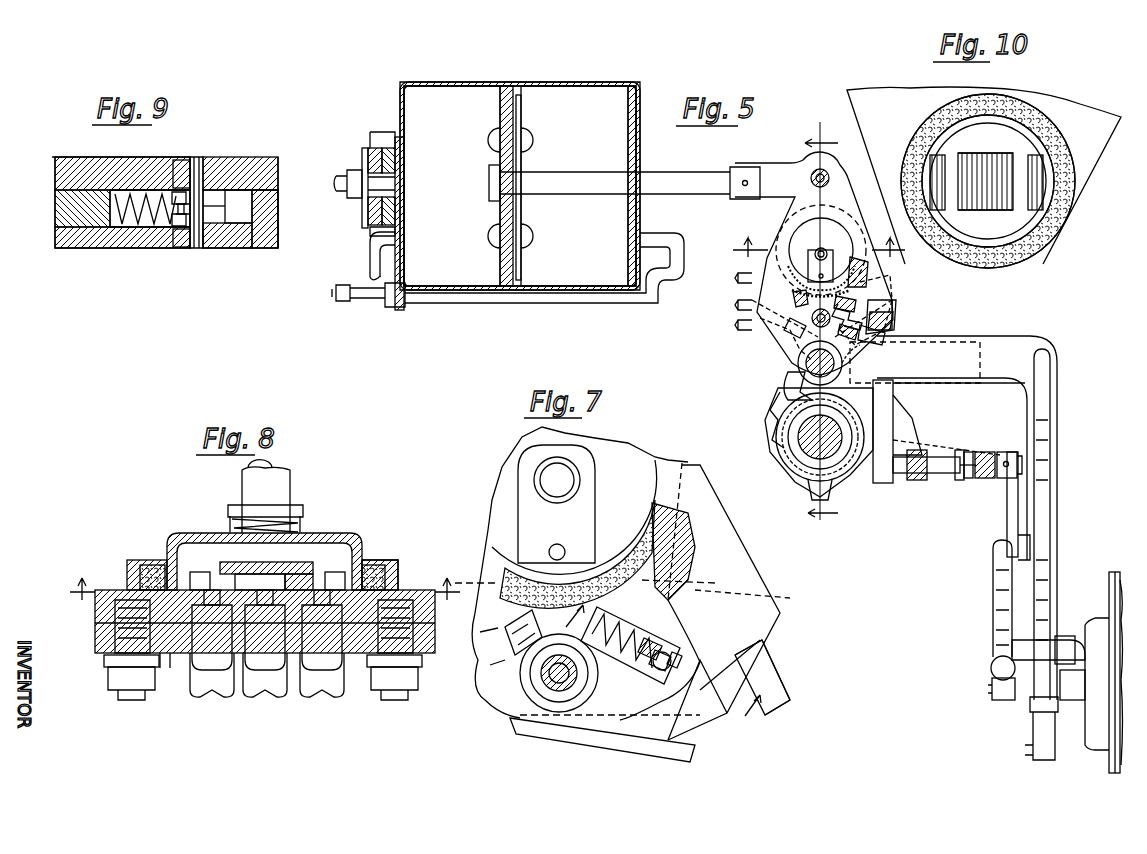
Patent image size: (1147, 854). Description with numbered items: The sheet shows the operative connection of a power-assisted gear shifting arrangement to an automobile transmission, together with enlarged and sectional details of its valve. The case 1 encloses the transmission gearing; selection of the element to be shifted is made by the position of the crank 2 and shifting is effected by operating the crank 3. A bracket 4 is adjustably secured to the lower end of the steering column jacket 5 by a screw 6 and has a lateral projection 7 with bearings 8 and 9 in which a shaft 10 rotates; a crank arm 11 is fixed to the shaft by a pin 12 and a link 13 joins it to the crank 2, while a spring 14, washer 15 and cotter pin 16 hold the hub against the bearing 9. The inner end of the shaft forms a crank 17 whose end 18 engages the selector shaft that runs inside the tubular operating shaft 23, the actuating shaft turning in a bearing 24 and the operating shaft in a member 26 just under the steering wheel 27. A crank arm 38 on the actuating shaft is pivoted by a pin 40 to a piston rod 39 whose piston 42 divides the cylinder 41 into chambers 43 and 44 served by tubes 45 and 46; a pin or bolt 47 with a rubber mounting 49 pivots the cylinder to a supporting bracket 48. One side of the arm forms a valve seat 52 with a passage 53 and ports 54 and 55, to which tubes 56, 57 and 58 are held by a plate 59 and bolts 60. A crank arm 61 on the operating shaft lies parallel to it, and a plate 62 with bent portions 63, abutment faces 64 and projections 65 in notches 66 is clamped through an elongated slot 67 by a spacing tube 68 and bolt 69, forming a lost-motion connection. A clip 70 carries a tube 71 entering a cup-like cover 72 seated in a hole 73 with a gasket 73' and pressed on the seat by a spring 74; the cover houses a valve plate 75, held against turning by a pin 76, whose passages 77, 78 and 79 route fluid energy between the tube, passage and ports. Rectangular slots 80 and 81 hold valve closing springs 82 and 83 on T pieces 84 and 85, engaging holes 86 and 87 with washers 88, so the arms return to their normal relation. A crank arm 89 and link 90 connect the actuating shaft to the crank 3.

In FIG. 5, the case 1 is at (1109, 600).
In FIG. 5, the crank 2 is at (1030, 655).
In FIG. 5, the crank 3 is at (1066, 706).
In FIG. 5, the bracket 4 is at (858, 475).
In FIG. 5, the steering column jacket 5 is at (790, 455).
In FIG. 5, the screw 6 is at (792, 512).
In FIG. 5, the lateral projection 7 is at (905, 420).
In FIG. 5, the bearing 8 is at (913, 505).
In FIG. 5, the bearing 9 is at (986, 478).
In FIG. 7, the bearing 9 is at (661, 670).
In FIG. 5, the shaft 10 is at (940, 458).
In FIG. 8, the shaft 10 is at (265, 601).
In FIG. 5, the crank arm 11 is at (968, 535).
In FIG. 5, the pin 12 is at (1006, 452).
In FIG. 5, the link 13 is at (995, 628).
In FIG. 5, the spring 14 is at (968, 452).
In FIG. 5, the washer 15 is at (970, 480).
In FIG. 5, the cotter pin 16 is at (958, 480).
In FIG. 5, the crank 17 is at (893, 394).
In FIG. 5, the end 18 is at (959, 358).
In FIG. 5, the tubular operating shaft 23 is at (880, 366).
In FIG. 5, the bearing 24 is at (775, 396).
In FIG. 5, the member 26 is at (800, 378).
In FIG. 5, the steering wheel 27 is at (798, 358).
In FIG. 9, the crank arm 38 is at (76, 214).
In FIG. 5, the crank arm 38 is at (855, 218).
In FIG. 8, the crank arm 38 is at (405, 585).
In FIG. 7, the crank arm 38 is at (615, 732).
In FIG. 5, the piston rod 39 is at (722, 170).
In FIG. 5, the pin 40 is at (830, 176).
In FIG. 5, the cylinder 41 is at (612, 288).
In FIG. 5, the piston 42 is at (515, 222).
In FIG. 5, the chamber 43 is at (442, 268).
In FIG. 5, the chamber 44 is at (558, 268).
In FIG. 5, the tube 45 is at (375, 270).
In FIG. 5, the tube 46 is at (678, 250).
In FIG. 5, the pin or bolt 47 is at (342, 196).
In FIG. 5, the supporting bracket 48 is at (386, 212).
In FIG. 5, the rubber mounting 49 is at (345, 222).
In FIG. 8, the valve seat 52 is at (266, 559).
In FIG. 8, the passage 53 is at (265, 630).
In FIG. 8, the port 54 is at (212, 630).
In FIG. 8, the port 55 is at (322, 630).
In FIG. 5, the tube 56 is at (738, 305).
In FIG. 8, the tube 56 is at (278, 695).
In FIG. 5, the tube 57 is at (738, 280).
In FIG. 8, the tube 57 is at (222, 695).
In FIG. 5, the tube 58 is at (738, 326).
In FIG. 8, the tube 58 is at (334, 695).
In FIG. 8, the plate 59 is at (172, 668).
In FIG. 8, the bolt 60 is at (128, 698).
In FIG. 9, the crank arm 61 is at (225, 172).
In FIG. 5, the crank arm 61 is at (886, 296).
In FIG. 10, the crank arm 61 is at (884, 100).
In FIG. 8, the crank arm 61 is at (385, 563).
In FIG. 7, the crank arm 61 is at (760, 572).
In FIG. 9, the plate 62 is at (130, 248).
In FIG. 5, the plate 62 is at (896, 308).
In FIG. 7, the plate 62 is at (700, 720).
In FIG. 9, the bent portion 63 is at (262, 207).
In FIG. 5, the bent portion 63 is at (893, 320).
In FIG. 7, the bent portion 63 is at (785, 668).
In FIG. 5, the abutment face 64 is at (885, 336).
In FIG. 7, the abutment face 64 is at (730, 684).
In FIG. 9, the projection 65 is at (280, 178).
In FIG. 5, the projection 65 is at (895, 326).
In FIG. 7, the projection 65 is at (775, 692).
In FIG. 7, the notch 66 is at (765, 658).
In FIG. 5, the elongated slot 67 is at (865, 350).
In FIG. 7, the elongated slot 67 is at (598, 676).
In FIG. 5, the spacing tube 68 is at (821, 274).
In FIG. 7, the spacing tube 68 is at (568, 690).
In FIG. 5, the bolt 69 is at (806, 363).
In FIG. 7, the bolt 69 is at (556, 690).
In FIG. 5, the clip 70 is at (821, 250).
In FIG. 8, the clip 70 is at (303, 506).
In FIG. 7, the clip 70 is at (590, 515).
In FIG. 8, the tube 71 is at (278, 480).
In FIG. 7, the tube 71 is at (582, 478).
In FIG. 5, the cup-like cover 72 is at (790, 212).
In FIG. 8, the cup-like cover 72 is at (355, 534).
In FIG. 7, the cup-like cover 72 is at (500, 510).
In FIG. 10, the hole 73 is at (1007, 181).
In FIG. 8, the hole 73 is at (262, 541).
In FIG. 7, the hole 73 is at (614, 508).
In FIG. 5, the oil and dust gasket 73' is at (859, 275).
In FIG. 10, the oil and dust gasket 73' is at (1003, 181).
In FIG. 8, the oil and dust gasket 73' is at (259, 549).
In FIG. 7, the oil and dust gasket 73' is at (684, 515).
In FIG. 8, the spring 74 is at (226, 522).
In FIG. 10, the valve plate 75 is at (1020, 148).
In FIG. 8, the valve plate 75 is at (260, 581).
In FIG. 5, the pin 76 is at (843, 272).
In FIG. 7, the pin 76 is at (553, 546).
In FIG. 10, the passage 77 is at (940, 205).
In FIG. 8, the passage 77 is at (202, 569).
In FIG. 10, the passage 78 is at (1036, 205).
In FIG. 8, the passage 78 is at (338, 569).
In FIG. 10, the passage 79 is at (987, 178).
In FIG. 8, the passage 79 is at (300, 574).
In FIG. 9, the rectangular slot 80 is at (152, 226).
In FIG. 5, the rectangular slot 80 is at (855, 318).
In FIG. 7, the rectangular slot 80 is at (625, 625).
In FIG. 5, the rectangular slot 81 is at (793, 328).
In FIG. 7, the rectangular slot 81 is at (535, 632).
In FIG. 9, the valve closing spring 82 is at (176, 192).
In FIG. 5, the valve closing spring 82 is at (853, 300).
In FIG. 7, the valve closing spring 82 is at (650, 640).
In FIG. 5, the valve closing spring 83 is at (790, 292).
In FIG. 7, the valve closing spring 83 is at (494, 672).
In FIG. 9, the T piece 84 is at (168, 228).
In FIG. 5, the T piece 84 is at (849, 332).
In FIG. 7, the T piece 84 is at (668, 652).
In FIG. 5, the T piece 85 is at (770, 325).
In FIG. 7, the T piece 85 is at (488, 629).
In FIG. 9, the hole or slot 86 is at (184, 160).
In FIG. 7, the hole or slot 86 is at (685, 647).
In FIG. 5, the hole or slot 87 is at (812, 313).
In FIG. 9, the washer 88 is at (227, 206).
In FIG. 7, the washer 88 is at (660, 672).
In FIG. 5, the crank arm 89 is at (974, 350).
In FIG. 5, the link 90 is at (1050, 410).